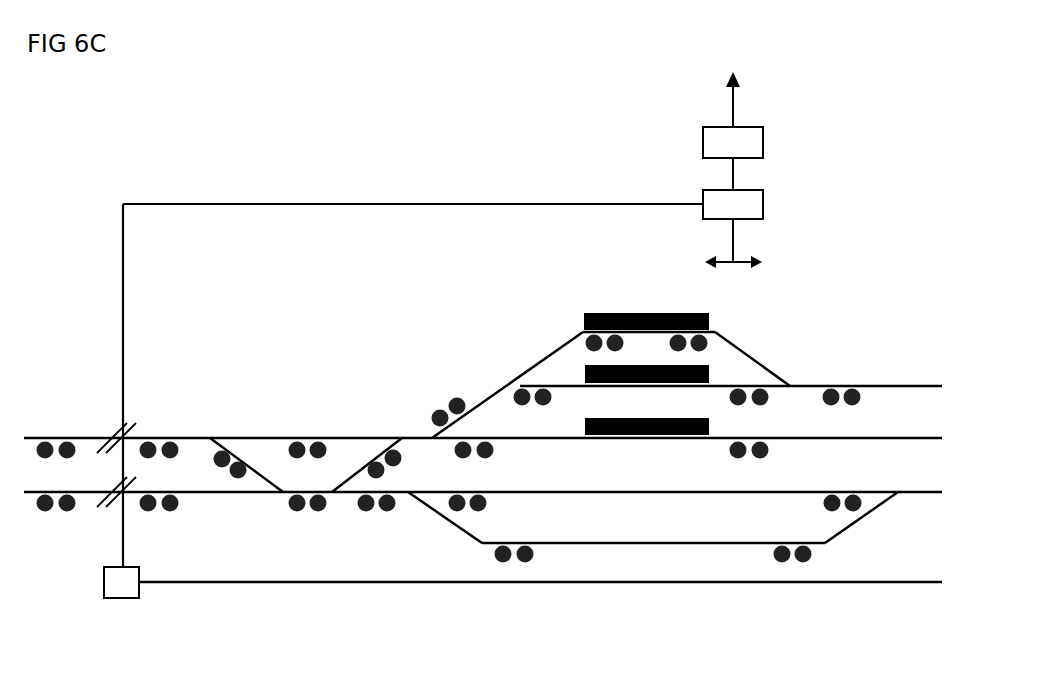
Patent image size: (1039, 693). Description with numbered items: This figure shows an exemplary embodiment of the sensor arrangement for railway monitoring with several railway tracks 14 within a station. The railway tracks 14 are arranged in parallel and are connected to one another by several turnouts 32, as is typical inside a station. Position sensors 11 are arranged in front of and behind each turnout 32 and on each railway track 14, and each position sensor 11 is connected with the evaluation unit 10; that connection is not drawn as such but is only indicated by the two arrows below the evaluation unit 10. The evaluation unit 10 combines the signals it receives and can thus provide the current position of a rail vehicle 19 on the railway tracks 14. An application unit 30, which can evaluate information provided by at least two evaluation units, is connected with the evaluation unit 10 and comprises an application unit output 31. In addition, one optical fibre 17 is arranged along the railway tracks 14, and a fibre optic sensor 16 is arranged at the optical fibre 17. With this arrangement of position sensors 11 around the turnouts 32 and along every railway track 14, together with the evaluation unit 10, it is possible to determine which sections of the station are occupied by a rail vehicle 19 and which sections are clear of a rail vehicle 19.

The evaluation unit 10 is at (763, 207).
The application unit 30 is at (763, 145).
The application unit output 31 is at (735, 103).
The position sensor 11 is at (386, 505).
The railway track 14 is at (898, 492).
The fibre optic sensor 16 is at (125, 598).
The optical fibre 17 is at (908, 583).
The rail vehicle 19 is at (630, 313).
The turnout 32 is at (400, 436).